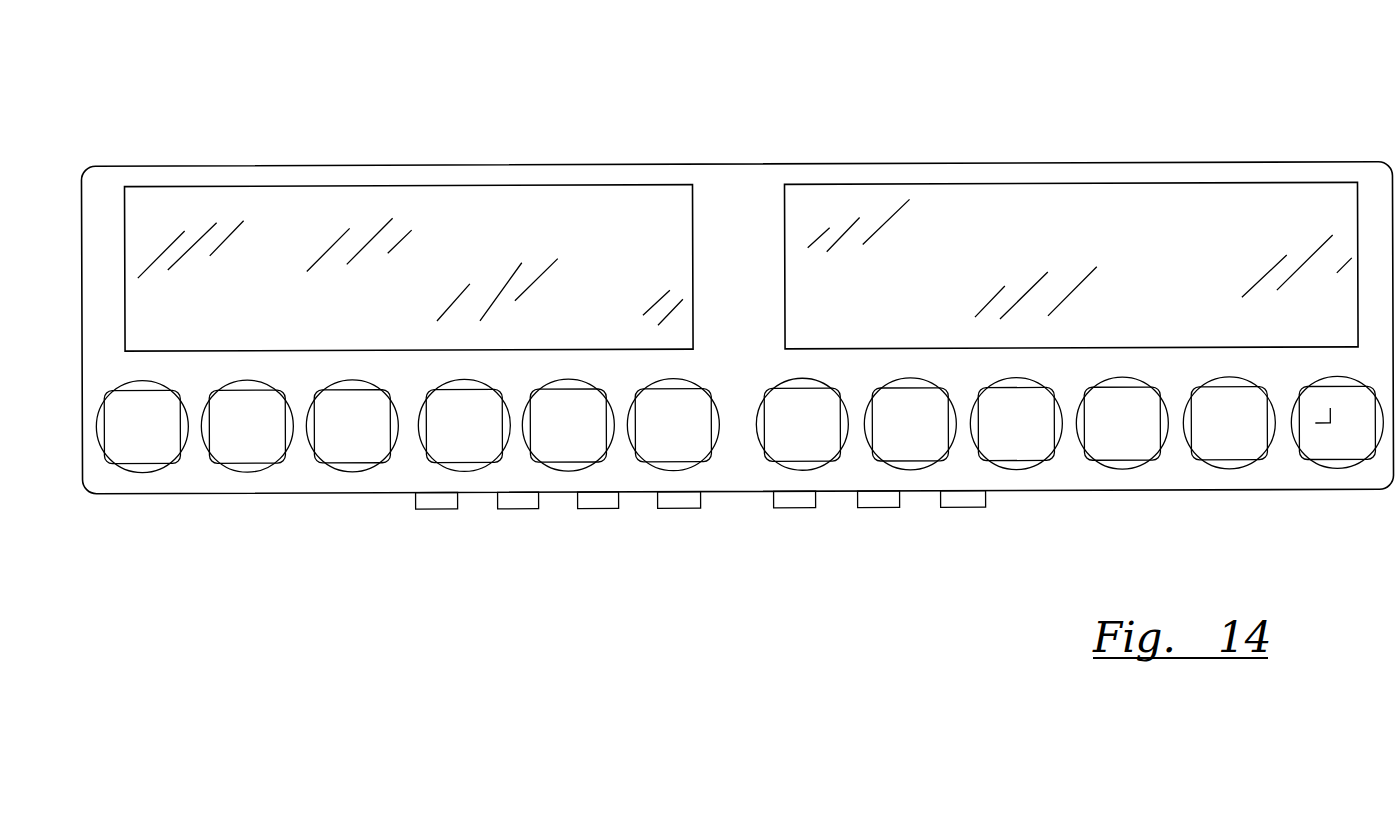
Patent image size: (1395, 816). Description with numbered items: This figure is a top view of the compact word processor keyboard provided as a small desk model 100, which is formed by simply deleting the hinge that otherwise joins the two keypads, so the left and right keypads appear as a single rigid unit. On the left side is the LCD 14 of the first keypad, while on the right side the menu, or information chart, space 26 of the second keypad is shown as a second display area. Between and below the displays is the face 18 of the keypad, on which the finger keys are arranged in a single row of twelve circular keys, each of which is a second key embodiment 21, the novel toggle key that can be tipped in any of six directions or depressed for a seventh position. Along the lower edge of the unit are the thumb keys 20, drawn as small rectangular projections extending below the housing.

The small desk model 100 is at (737, 327).
The LCD 14 is at (319, 322).
The menu space 26 is at (1083, 241).
The face 18 is at (741, 356).
The thumb keys 20 is at (511, 508).
The second key embodiment 21 is at (910, 463).